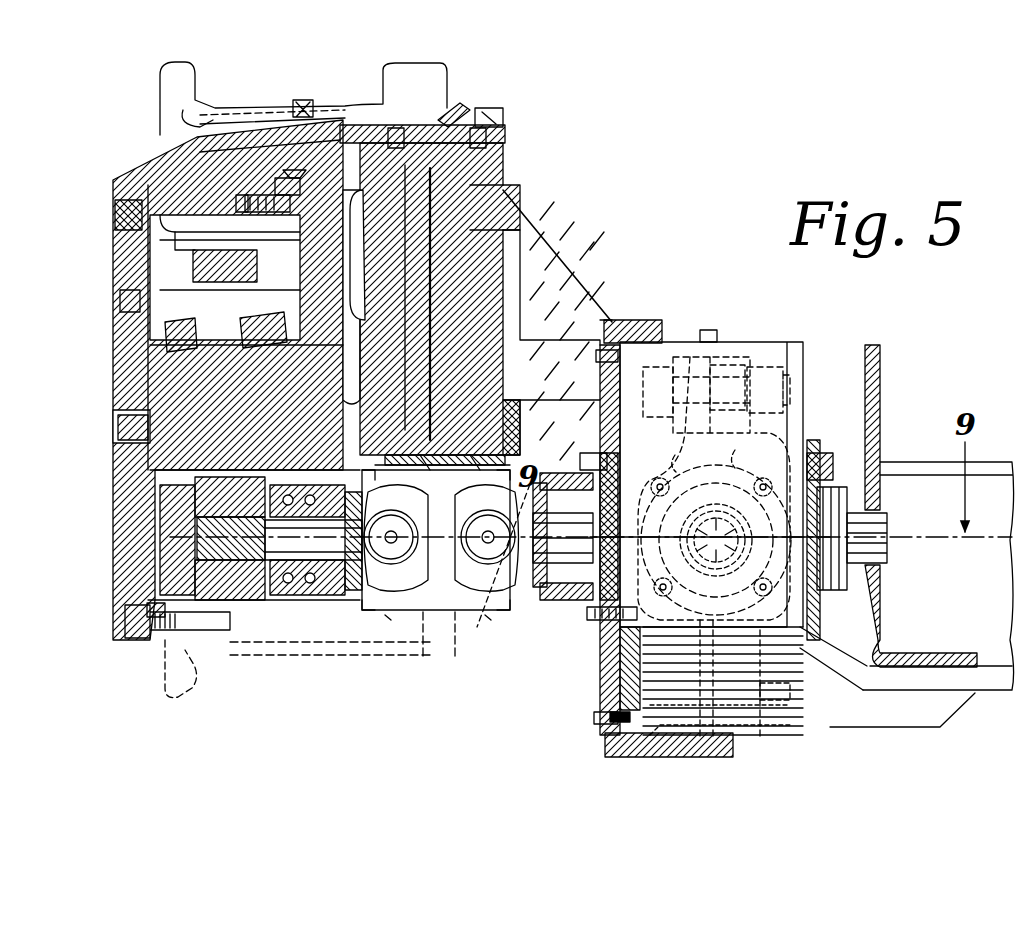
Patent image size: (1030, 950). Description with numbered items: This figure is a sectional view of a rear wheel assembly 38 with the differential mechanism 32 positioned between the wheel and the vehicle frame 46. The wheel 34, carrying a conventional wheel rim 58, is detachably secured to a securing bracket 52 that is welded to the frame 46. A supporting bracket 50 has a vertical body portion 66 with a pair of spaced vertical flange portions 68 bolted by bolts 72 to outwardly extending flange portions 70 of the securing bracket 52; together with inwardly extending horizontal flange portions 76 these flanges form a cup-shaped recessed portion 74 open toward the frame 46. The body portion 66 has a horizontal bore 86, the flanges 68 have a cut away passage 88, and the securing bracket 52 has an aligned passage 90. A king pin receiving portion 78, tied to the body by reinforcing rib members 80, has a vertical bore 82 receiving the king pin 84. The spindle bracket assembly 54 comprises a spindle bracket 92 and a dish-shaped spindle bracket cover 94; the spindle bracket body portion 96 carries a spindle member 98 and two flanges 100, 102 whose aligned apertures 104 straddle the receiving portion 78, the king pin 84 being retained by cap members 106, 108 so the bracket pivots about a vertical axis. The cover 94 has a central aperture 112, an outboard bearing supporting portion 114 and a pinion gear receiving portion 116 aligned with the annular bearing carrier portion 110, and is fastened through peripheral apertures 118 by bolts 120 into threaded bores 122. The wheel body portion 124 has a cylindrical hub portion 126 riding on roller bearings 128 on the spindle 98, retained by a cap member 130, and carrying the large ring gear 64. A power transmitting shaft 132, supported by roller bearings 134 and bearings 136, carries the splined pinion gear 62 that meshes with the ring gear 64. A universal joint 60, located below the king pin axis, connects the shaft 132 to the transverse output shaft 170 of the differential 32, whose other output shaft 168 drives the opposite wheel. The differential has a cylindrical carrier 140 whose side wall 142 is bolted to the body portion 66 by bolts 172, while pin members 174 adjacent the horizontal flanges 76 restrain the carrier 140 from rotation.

The differential mechanism 32 is at (846, 600).
The wheel 34 is at (84, 196).
The wheel assembly 38 is at (620, 244).
The vehicle frame 46 is at (882, 384).
The supporting bracket 50 is at (615, 283).
The securing bracket 52 is at (852, 342).
The spindle bracket assembly 54 is at (270, 178).
The wheel rim 58 is at (334, 106).
The universal joint 60 is at (459, 609).
The pinion gear 62 is at (250, 601).
The ring gear 64 is at (266, 268).
The body portion 66 is at (602, 433).
The vertical flange portions 68 is at (690, 343).
The flange portions 70 is at (723, 352).
The bolts 72 is at (786, 352).
The recessed portion 74 is at (645, 392).
The horizontal flange portions 76 is at (642, 322).
The king pin receiving portion 78 is at (472, 210).
The reinforcing rib members 80 is at (526, 233).
The vertical cylindrical bore 82 is at (472, 230).
The king pin 84 is at (457, 190).
The horizontal bore 86 is at (611, 610).
The cut away portion 88 is at (678, 445).
The cut away portion 90 is at (743, 450).
The spindle bracket 92 is at (336, 150).
The spindle bracket cover 94 is at (202, 228).
The body portion 96 is at (334, 297).
The spindle member 98 is at (246, 369).
The flange portion 100 is at (380, 126).
The flange portion 102 is at (392, 302).
The apertures 104 is at (496, 158).
The cap member 106 is at (471, 124).
The cap member 108 is at (452, 462).
The annular bearing carrier portion 110 is at (300, 600).
The central aperture 112 is at (186, 236).
The outboard bearing supporting portion 114 is at (126, 604).
The pinion gear receiving portion 116 is at (245, 601).
The apertures 118 is at (290, 206).
The bolts 120 is at (242, 206).
The threaded bores 122 is at (303, 185).
The body portion 124 is at (116, 250).
The cylindrical hub portion 126 is at (128, 306).
The roller bearings 128 is at (130, 322).
The cap member 130 is at (148, 412).
The power transmitting shaft 132 is at (358, 600).
The roller bearings 134 is at (186, 512).
The bearings 136 is at (276, 600).
The cylindrical carrier 140 is at (757, 746).
The side wall 142 is at (608, 714).
The power output shaft 168 is at (811, 490).
The power output shaft 170 is at (536, 604).
The bolts 172 is at (604, 658).
The pin members 174 is at (606, 330).